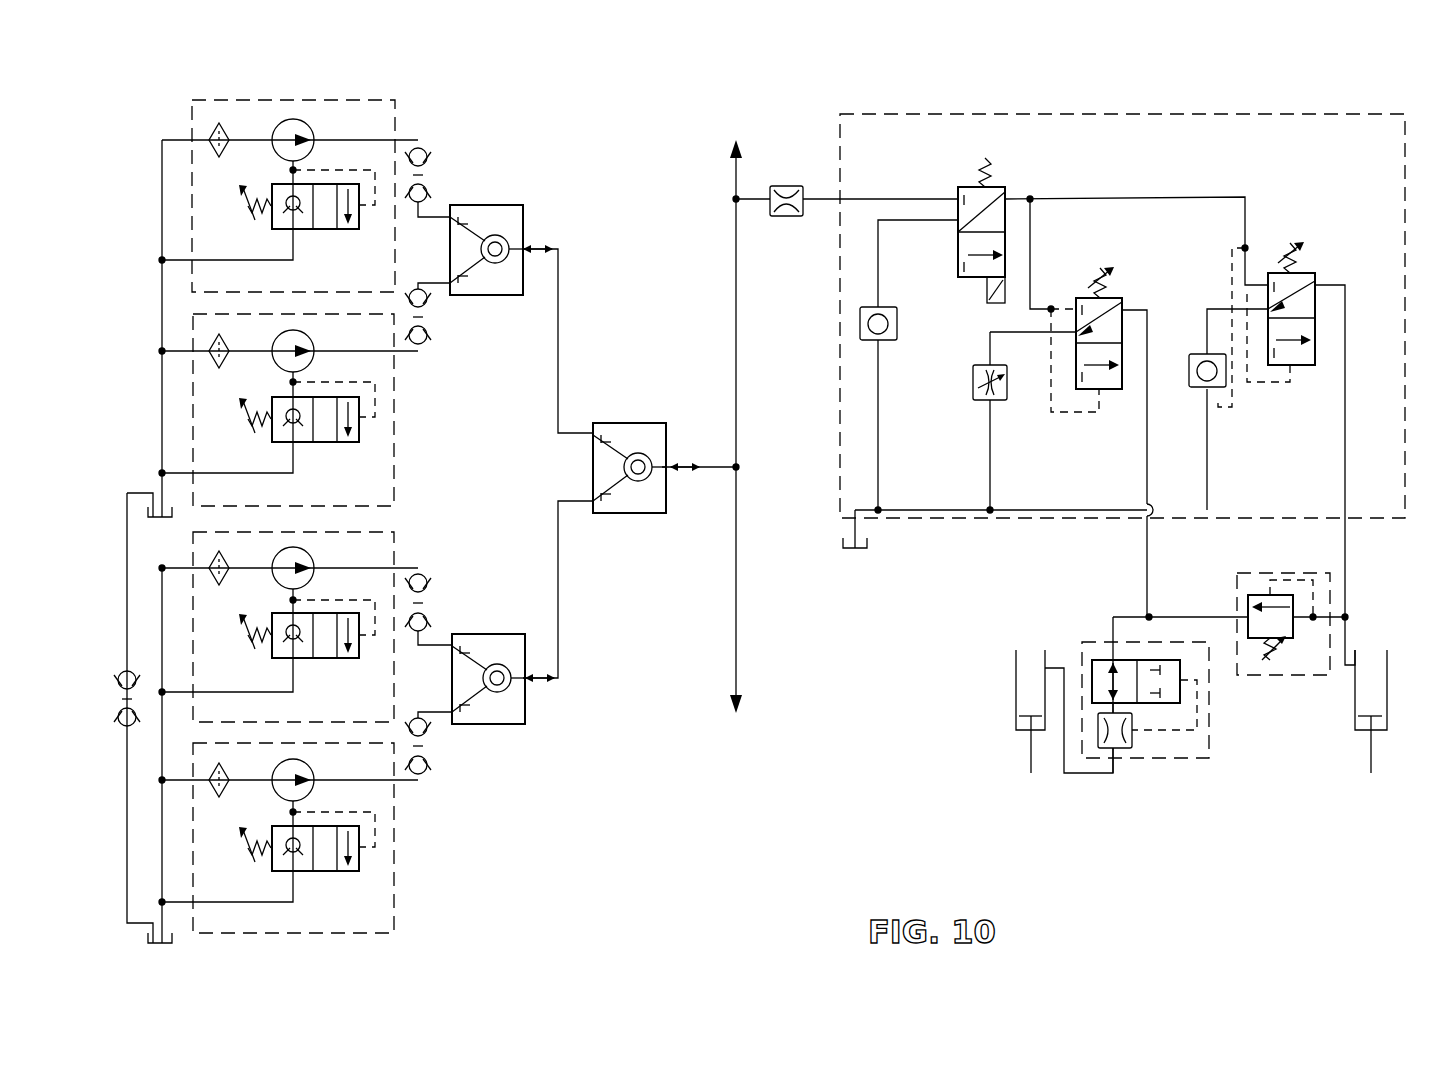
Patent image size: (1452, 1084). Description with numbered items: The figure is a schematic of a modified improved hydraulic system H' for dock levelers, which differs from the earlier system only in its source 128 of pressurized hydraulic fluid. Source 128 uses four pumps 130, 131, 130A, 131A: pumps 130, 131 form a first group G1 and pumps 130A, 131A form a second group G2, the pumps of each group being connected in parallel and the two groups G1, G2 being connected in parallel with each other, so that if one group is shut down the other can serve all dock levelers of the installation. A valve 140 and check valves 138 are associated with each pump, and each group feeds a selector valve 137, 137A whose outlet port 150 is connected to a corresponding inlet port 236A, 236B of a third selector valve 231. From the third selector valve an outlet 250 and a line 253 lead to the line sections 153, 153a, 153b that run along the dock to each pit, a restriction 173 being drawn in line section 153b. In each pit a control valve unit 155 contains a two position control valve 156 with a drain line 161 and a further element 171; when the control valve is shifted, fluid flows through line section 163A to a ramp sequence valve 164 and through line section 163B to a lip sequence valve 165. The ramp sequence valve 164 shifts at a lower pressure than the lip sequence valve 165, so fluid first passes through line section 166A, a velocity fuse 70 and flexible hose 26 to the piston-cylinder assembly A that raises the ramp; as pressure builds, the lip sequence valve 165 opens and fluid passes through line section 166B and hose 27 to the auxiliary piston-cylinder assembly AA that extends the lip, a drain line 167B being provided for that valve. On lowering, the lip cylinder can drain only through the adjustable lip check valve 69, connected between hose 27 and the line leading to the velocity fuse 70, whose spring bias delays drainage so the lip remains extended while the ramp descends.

The pump 130 is at (293, 118).
The pump 131 is at (285, 335).
The pump 130A is at (300, 548).
The pump 131A is at (315, 793).
The relief valve 140 is at (314, 236).
The check valve 138 is at (432, 150).
The selector valve 137 is at (528, 212).
The hydraulic motor 137A is at (520, 633).
The outlet port 150 is at (530, 248).
The line 153 is at (558, 384).
The line 153a is at (736, 290).
The line 153b is at (760, 205).
The source of pressurized hydraulic fluid 128 is at (606, 330).
The hydraulic motor 231 is at (672, 420).
The inlet port 236A is at (596, 432).
The inlet port 236B is at (594, 500).
The line 250 is at (672, 463).
The line 253 is at (712, 470).
The orifice 173 is at (795, 183).
The control circuit 163B is at (1185, 112).
The line 163A is at (1042, 230).
The directional valve 156 is at (946, 238).
The pressure gauge 161 is at (878, 470).
The control circuit 155 is at (830, 410).
The flow control valve 171 is at (966, 392).
The pressure reducing valve 164 is at (1128, 300).
The pressure reducing valve 165 is at (1325, 268).
The line 166A is at (1147, 440).
The line 166B is at (1345, 460).
The pressure gauge 167B is at (1240, 420).
The adjustable lip check valve 69 is at (1253, 572).
The velocity fuse 70 is at (1212, 735).
The flexible high pressure hose 26 is at (1090, 775).
The flexible high pressure hose 27 is at (1345, 652).
The piston-cylinder assembly A is at (1030, 648).
The auxiliary piston-cylinder assembly AA is at (1388, 645).
The pump group G1 is at (408, 373).
The pump group G2 is at (408, 553).
The modified improved hydraulic system H is at (700, 708).